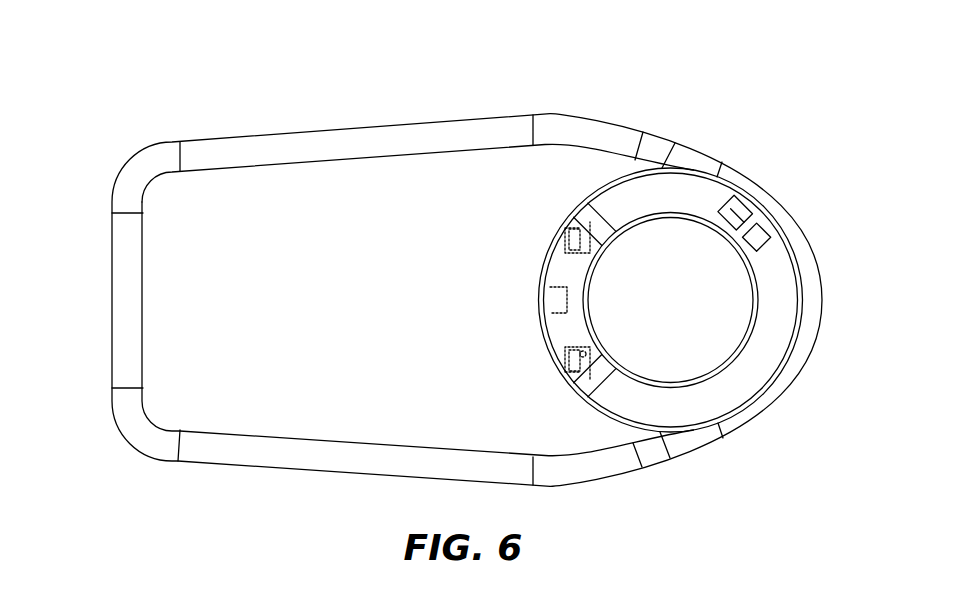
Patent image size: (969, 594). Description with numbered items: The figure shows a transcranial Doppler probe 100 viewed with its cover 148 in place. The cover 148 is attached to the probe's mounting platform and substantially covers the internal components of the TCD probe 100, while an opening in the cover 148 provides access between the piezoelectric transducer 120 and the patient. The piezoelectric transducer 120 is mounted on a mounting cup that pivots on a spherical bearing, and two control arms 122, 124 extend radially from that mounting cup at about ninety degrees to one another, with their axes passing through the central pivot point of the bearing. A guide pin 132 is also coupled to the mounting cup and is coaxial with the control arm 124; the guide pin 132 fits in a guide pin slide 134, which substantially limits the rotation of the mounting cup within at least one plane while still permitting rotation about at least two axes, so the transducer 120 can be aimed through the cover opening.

The transcranial Doppler probe 100 is at (636, 96).
The cover 148 is at (276, 280).
The control arm 122 is at (598, 222).
The control arm 124 is at (598, 375).
The piezoelectric transducer 120 is at (675, 307).
The guide pin 132 is at (743, 230).
The guide pin slide 134 is at (760, 238).